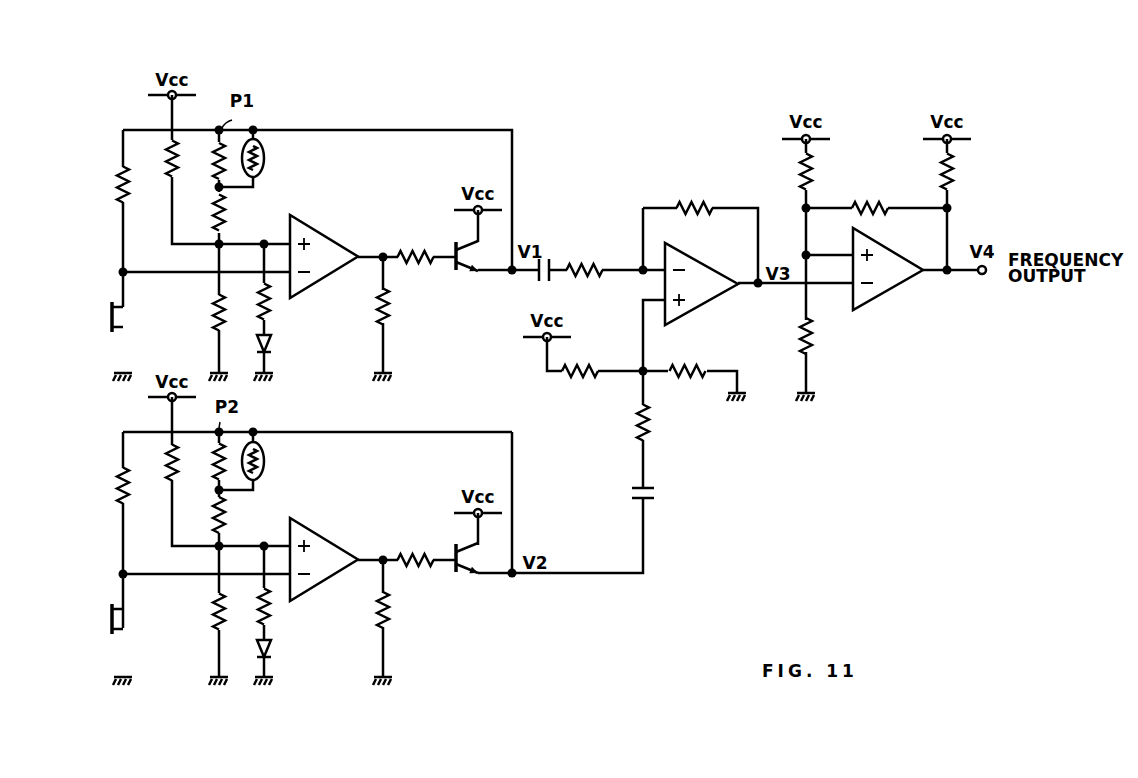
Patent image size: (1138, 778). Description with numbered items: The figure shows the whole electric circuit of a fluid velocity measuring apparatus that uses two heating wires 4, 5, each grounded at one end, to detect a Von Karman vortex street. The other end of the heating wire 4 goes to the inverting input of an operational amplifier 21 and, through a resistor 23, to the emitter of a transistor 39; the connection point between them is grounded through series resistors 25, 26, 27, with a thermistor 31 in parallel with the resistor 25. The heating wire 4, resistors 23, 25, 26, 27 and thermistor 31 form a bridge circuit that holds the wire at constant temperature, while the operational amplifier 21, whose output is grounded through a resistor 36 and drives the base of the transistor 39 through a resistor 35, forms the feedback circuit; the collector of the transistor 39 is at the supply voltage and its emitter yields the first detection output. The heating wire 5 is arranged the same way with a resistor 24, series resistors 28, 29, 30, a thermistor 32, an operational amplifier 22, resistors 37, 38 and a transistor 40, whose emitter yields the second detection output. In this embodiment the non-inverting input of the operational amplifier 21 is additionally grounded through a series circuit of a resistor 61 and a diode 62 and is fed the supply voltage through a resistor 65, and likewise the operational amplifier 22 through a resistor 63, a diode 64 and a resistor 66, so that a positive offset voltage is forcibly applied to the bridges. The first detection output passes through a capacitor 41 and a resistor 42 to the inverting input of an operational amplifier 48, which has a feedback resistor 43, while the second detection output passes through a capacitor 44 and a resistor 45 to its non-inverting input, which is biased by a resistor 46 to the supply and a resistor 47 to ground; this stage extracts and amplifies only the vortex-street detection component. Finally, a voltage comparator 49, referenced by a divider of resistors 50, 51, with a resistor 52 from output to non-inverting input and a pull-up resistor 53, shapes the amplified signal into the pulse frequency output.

The heating wire 4 is at (107, 317).
The heating wire 5 is at (107, 627).
The operational amplifier 21 is at (330, 237).
The operational amplifier 22 is at (330, 547).
The resistor 23 is at (115, 185).
The resistor 24 is at (115, 490).
The resistor 25 is at (212, 147).
The resistor 26 is at (230, 220).
The resistor 27 is at (212, 305).
The resistor 28 is at (208, 463).
The resistor 29 is at (230, 520).
The resistor 30 is at (207, 610).
The thermistor 31 is at (265, 162).
The thermistor 32 is at (265, 458).
The resistor 35 is at (418, 245).
The resistor 36 is at (395, 303).
The resistor 37 is at (425, 548).
The resistor 38 is at (395, 605).
The transistor 39 is at (460, 273).
The transistor 40 is at (460, 577).
The capacitor 41 is at (547, 252).
The resistor 42 is at (590, 252).
The resistor 43 is at (700, 197).
The capacitor 44 is at (657, 492).
The resistor 45 is at (657, 427).
The resistor 46 is at (585, 380).
The resistor 47 is at (690, 380).
The operational amplifier 48 is at (703, 308).
The voltage comparator 49 is at (890, 292).
The resistor 50 is at (799, 173).
The resistor 51 is at (814, 338).
The resistor 52 is at (877, 200).
The resistor 53 is at (957, 167).
The resistor 61 is at (280, 308).
The diode 62 is at (275, 345).
The resistor 63 is at (275, 612).
The diode 64 is at (275, 650).
The resistor 65 is at (163, 170).
The resistor 66 is at (162, 473).